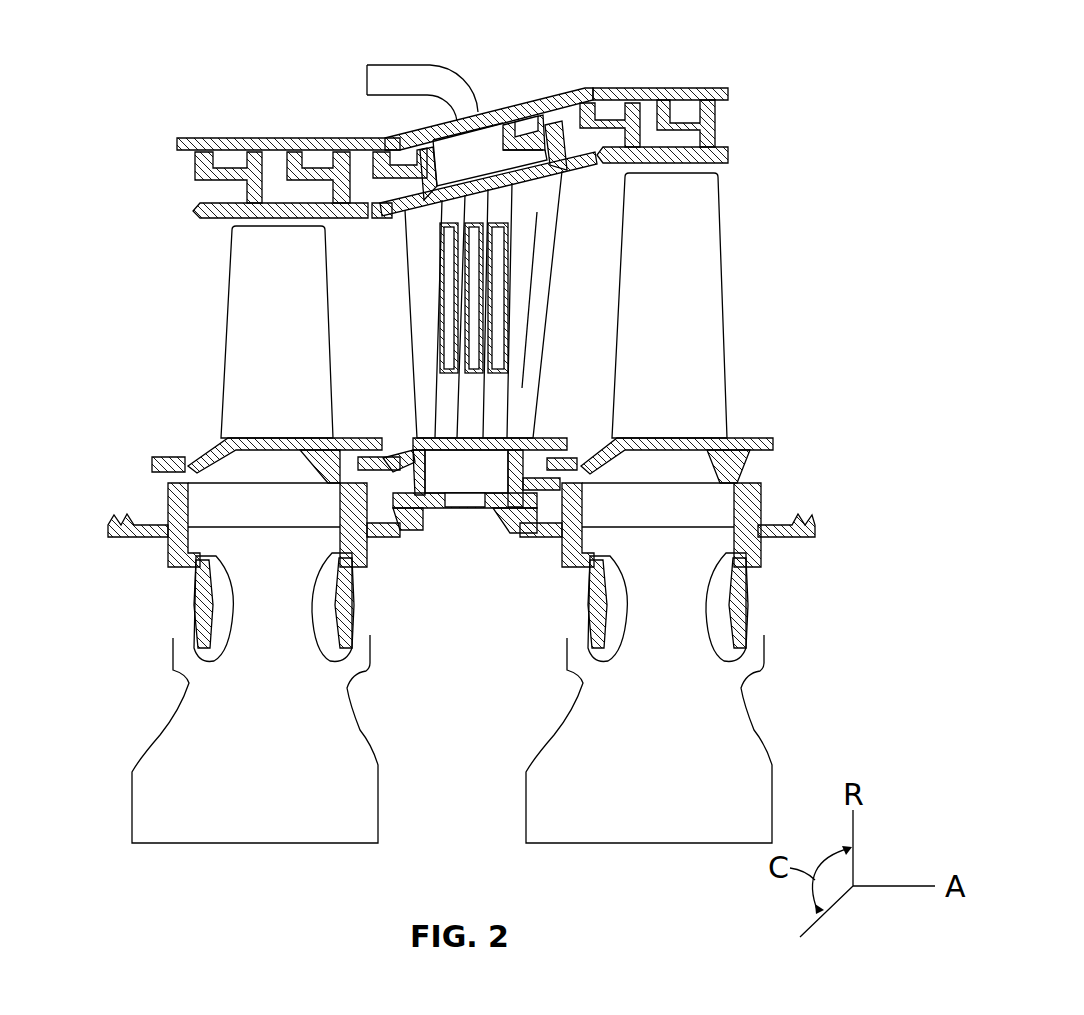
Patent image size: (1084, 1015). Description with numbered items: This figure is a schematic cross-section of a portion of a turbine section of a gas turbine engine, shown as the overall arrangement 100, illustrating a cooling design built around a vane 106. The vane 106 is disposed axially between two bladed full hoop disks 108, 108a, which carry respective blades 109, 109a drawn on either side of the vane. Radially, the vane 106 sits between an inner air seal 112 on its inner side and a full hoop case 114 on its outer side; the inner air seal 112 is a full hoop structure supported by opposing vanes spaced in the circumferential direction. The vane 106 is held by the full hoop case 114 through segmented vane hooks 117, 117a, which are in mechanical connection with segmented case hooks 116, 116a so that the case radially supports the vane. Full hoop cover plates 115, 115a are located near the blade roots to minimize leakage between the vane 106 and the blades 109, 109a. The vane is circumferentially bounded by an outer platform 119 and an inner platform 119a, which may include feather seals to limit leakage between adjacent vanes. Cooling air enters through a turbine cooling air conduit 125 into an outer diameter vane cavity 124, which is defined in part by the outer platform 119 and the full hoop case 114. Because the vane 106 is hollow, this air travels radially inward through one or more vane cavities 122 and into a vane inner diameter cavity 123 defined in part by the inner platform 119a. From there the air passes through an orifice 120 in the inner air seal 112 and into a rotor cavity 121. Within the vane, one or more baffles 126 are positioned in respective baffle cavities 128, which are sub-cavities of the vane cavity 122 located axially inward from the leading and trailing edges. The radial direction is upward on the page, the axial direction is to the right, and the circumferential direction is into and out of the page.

The turbine section 100 is at (172, 56).
The vane 106 is at (545, 268).
The bladed full hoop disk 108 is at (757, 782).
The bladed full hoop disk 108a is at (140, 808).
The blade 109 is at (722, 292).
The blade 109a is at (232, 288).
The inner air seal 112 is at (553, 498).
The full hoop case 114 is at (730, 92).
The full hoop cover plate 115 is at (740, 594).
The full hoop cover plate 115a is at (343, 597).
The segmented case hook 116 is at (541, 116).
The segmented case hook 116a is at (368, 138).
The segmented vane hook 117 is at (562, 103).
The segmented vane hook 117a is at (384, 158).
The outer platform 119 is at (581, 163).
The inner platform 119a is at (413, 445).
The orifice 120 is at (448, 502).
The rotor cavity 121 is at (466, 674).
The vane cavity 122 is at (528, 330).
The vane inner diameter cavity 123 is at (462, 484).
The outer diameter vane cavity 124 is at (480, 145).
The turbine cooling air conduit 125 is at (368, 66).
The baffle 126 is at (448, 287).
The baffle cavity 128 is at (433, 342).